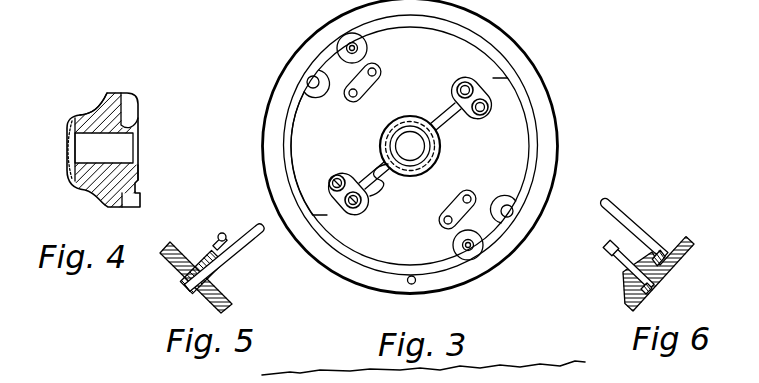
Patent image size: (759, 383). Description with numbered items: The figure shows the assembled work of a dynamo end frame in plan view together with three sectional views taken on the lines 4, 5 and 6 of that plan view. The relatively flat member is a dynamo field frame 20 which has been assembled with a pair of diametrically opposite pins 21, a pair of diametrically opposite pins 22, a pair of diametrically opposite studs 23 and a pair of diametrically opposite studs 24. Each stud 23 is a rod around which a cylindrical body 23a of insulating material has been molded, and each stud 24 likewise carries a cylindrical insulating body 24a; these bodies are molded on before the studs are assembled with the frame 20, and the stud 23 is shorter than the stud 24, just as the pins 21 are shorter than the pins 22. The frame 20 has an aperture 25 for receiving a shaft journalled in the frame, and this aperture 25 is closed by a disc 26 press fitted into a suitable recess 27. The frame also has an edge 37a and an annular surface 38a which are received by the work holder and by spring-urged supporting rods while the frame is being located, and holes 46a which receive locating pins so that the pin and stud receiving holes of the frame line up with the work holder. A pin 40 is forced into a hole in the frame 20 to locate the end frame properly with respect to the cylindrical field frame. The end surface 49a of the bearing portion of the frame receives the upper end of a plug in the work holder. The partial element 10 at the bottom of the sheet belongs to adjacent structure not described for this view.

In FIG. 3, the frame 10 is at (423, 372).
In FIG. 3, the dynamo field frame 20 is at (527, 62).
In FIG. 4, the dynamo field frame 20 is at (139, 102).
In FIG. 5, the dynamo field frame 20 is at (163, 252).
In FIG. 6, the dynamo field frame 20 is at (688, 249).
In FIG. 3, the pins 21 is at (376, 73).
In FIG. 6, the pins 21 is at (606, 249).
In FIG. 3, the pins 22 is at (352, 94).
In FIG. 6, the pins 22 is at (615, 206).
In FIG. 3, the studs 23 is at (488, 107).
In FIG. 5, the studs 23 is at (221, 232).
In FIG. 5, the cylindrical body of insulating material 23a is at (185, 288).
In FIG. 3, the studs 24 is at (466, 86).
In FIG. 5, the studs 24 is at (253, 238).
In FIG. 5, the cylindrical insulating body 24a is at (200, 297).
In FIG. 4, the aperture 25 is at (110, 149).
In FIG. 3, the disc 26 is at (412, 146).
In FIG. 4, the disc 26 is at (67, 149).
In FIG. 4, the recess 27 is at (90, 116).
In FIG. 3, the edge of the dynamo frame 37a is at (530, 147).
In FIG. 3, the annular surface of the frame 38a is at (538, 178).
In FIG. 3, the pin 40 is at (412, 284).
In FIG. 3, the holes 46a is at (307, 82).
In FIG. 4, the end surface of the bearing portions 49a is at (139, 176).
In FIG. 3, the section line 4— 4 is at (420, 190).
In FIG. 3, the section line 5— 5 is at (386, 216).
In FIG. 3, the section line 6— 6 is at (427, 234).